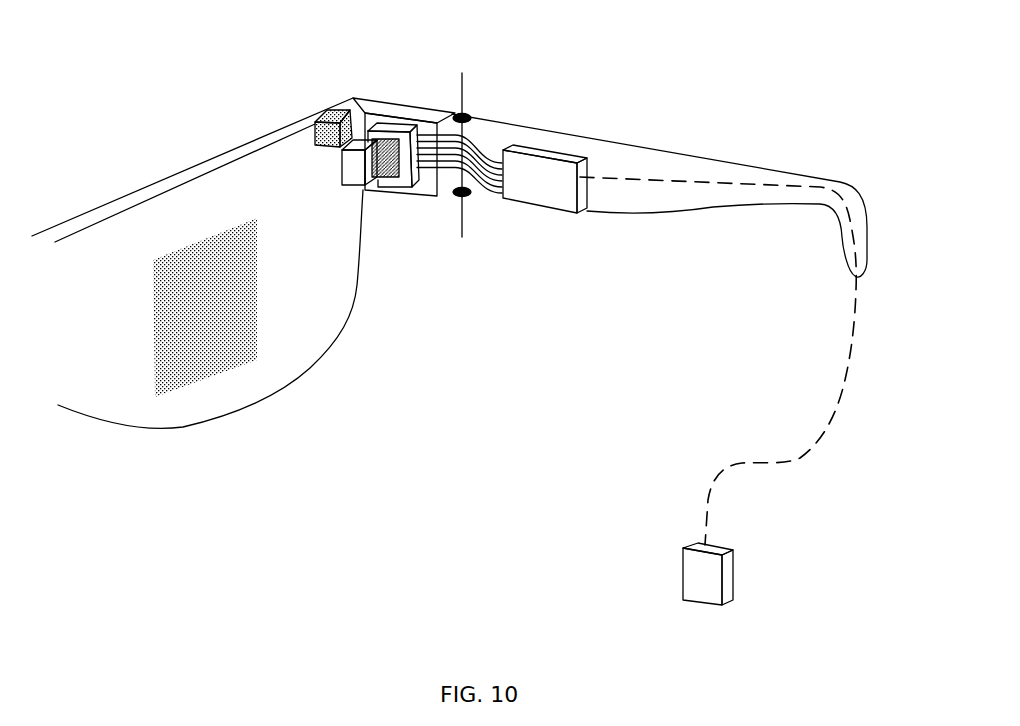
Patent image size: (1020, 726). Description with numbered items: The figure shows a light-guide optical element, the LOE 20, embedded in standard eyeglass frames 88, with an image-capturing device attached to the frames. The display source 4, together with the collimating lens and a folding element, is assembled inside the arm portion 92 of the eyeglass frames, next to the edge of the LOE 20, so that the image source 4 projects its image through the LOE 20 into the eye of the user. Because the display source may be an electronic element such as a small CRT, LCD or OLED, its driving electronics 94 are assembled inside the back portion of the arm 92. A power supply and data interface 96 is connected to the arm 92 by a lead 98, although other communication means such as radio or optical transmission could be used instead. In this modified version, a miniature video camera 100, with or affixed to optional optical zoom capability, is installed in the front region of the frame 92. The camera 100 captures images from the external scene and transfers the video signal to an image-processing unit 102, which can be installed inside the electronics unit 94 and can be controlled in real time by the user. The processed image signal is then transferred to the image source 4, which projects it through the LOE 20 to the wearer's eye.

The display source 4 is at (430, 91).
The LOE 20 is at (280, 348).
The eyeglass frames 88 is at (655, 124).
The arm portion of the eyeglass frames 92 is at (371, 104).
The driving electronics 94 is at (571, 127).
The power supply and data interface 96 is at (680, 568).
The lead 98 is at (837, 373).
The miniature video camera 100 is at (313, 124).
The image-processing unit 102 is at (530, 147).